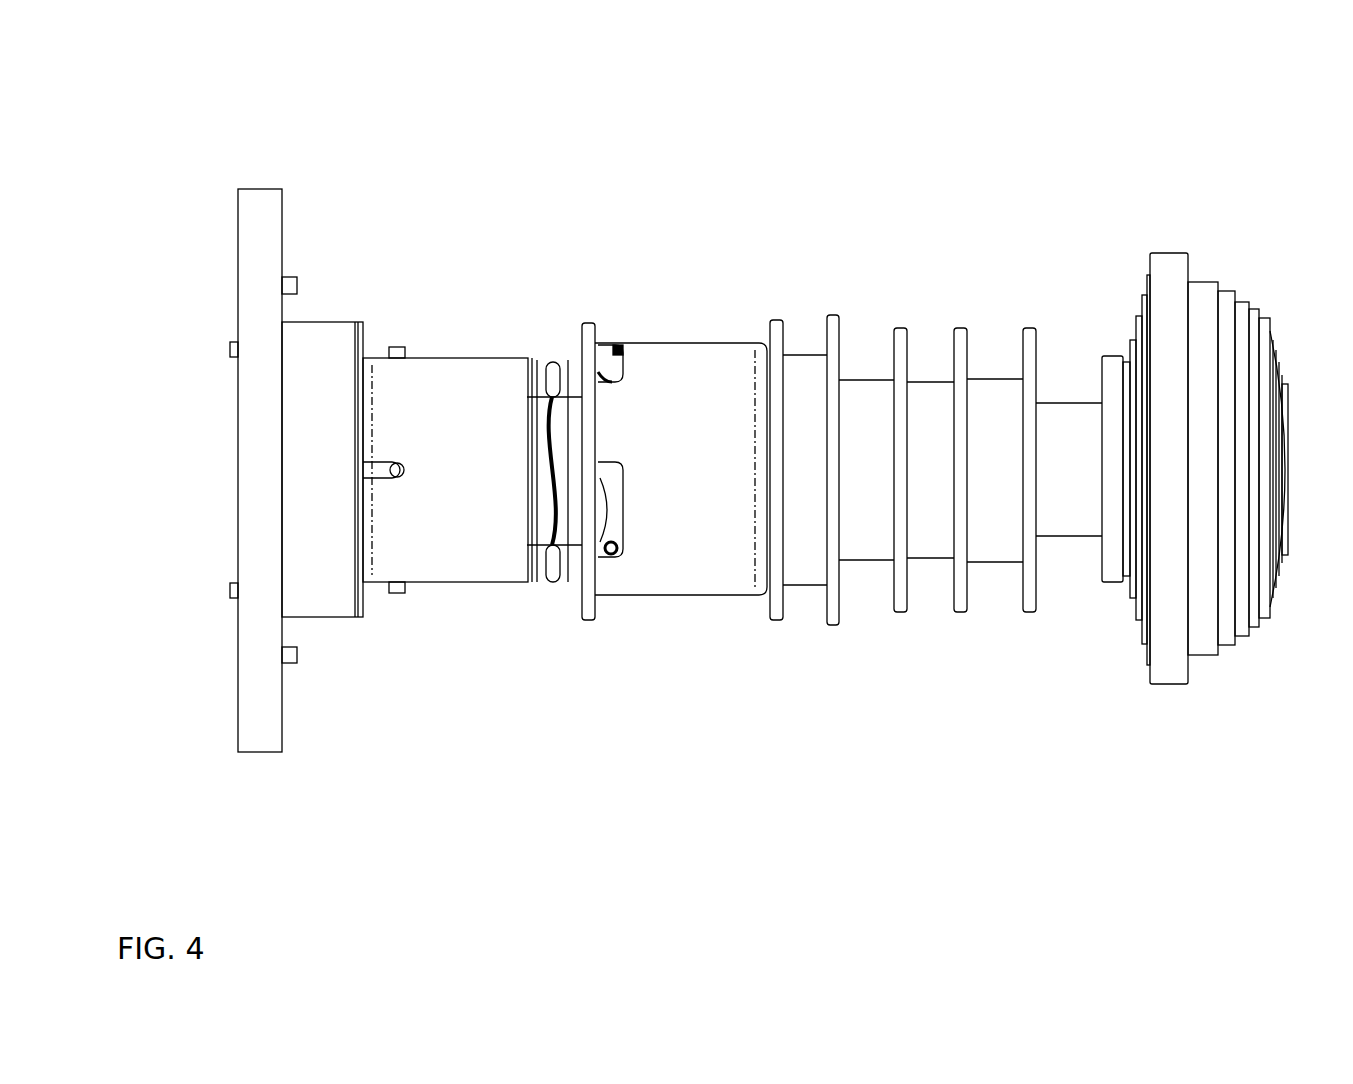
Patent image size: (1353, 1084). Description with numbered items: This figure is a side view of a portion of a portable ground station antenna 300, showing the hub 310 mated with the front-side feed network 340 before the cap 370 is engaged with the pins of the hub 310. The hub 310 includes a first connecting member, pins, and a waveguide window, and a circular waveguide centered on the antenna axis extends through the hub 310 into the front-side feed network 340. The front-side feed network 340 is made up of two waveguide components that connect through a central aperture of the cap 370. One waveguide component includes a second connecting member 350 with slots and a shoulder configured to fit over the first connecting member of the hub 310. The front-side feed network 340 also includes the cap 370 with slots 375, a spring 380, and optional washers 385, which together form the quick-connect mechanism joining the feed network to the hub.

The portable ground station antenna 300 is at (222, 66).
The hub 310 is at (492, 845).
The front-side feed network 340 is at (1292, 155).
The second connecting member 350 is at (457, 575).
The cap 370 is at (723, 595).
The slots 375 is at (617, 382).
The spring 380 is at (555, 358).
The washers 385 is at (535, 357).